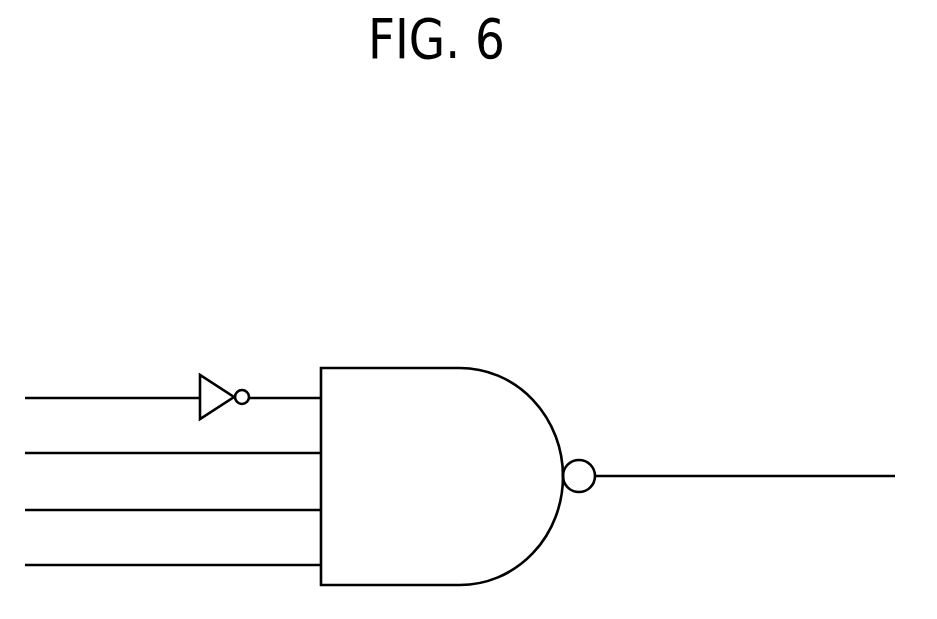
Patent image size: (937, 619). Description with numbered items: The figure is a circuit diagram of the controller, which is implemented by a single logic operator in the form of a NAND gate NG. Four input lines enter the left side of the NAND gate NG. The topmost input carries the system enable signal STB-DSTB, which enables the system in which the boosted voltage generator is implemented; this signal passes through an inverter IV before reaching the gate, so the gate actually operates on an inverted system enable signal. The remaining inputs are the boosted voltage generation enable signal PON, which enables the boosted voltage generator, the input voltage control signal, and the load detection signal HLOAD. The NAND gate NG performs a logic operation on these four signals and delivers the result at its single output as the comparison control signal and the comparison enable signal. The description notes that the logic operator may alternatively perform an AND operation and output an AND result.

The inverter IV is at (208, 378).
The NAND gate NG is at (483, 370).
The system enable signal STB-DSTB is at (112, 379).
The boosted voltage generation enable signal PON is at (173, 434).
The load detection signal HLOAD is at (173, 546).